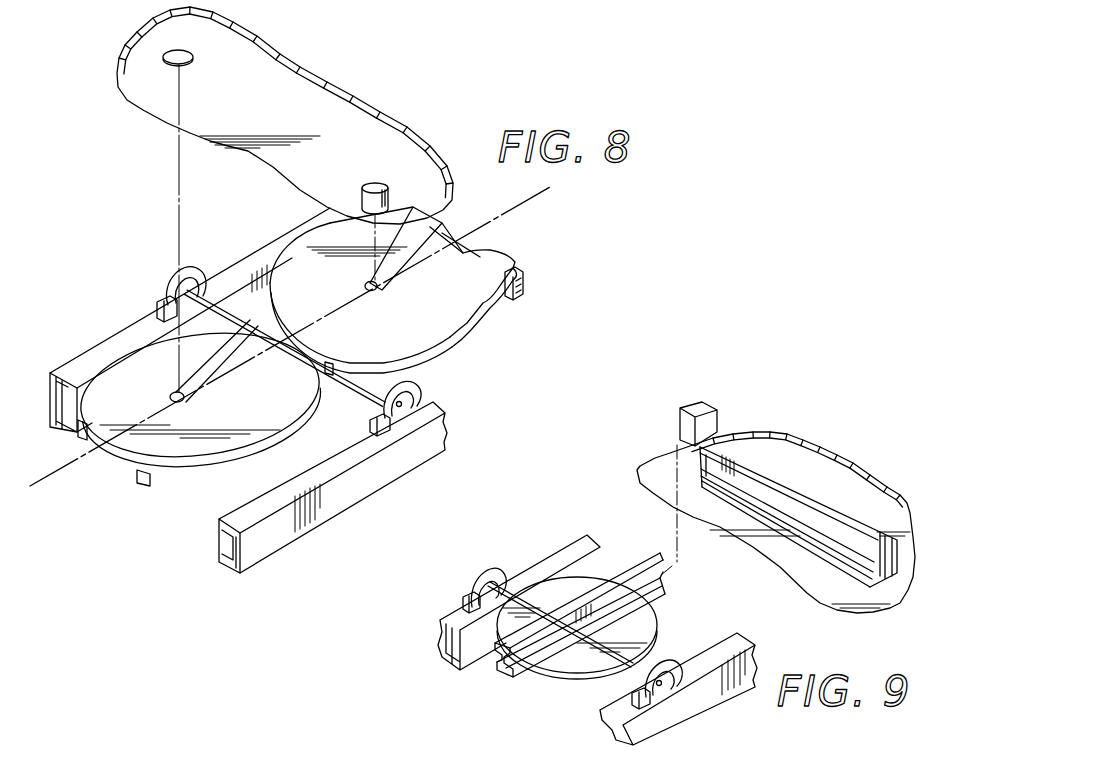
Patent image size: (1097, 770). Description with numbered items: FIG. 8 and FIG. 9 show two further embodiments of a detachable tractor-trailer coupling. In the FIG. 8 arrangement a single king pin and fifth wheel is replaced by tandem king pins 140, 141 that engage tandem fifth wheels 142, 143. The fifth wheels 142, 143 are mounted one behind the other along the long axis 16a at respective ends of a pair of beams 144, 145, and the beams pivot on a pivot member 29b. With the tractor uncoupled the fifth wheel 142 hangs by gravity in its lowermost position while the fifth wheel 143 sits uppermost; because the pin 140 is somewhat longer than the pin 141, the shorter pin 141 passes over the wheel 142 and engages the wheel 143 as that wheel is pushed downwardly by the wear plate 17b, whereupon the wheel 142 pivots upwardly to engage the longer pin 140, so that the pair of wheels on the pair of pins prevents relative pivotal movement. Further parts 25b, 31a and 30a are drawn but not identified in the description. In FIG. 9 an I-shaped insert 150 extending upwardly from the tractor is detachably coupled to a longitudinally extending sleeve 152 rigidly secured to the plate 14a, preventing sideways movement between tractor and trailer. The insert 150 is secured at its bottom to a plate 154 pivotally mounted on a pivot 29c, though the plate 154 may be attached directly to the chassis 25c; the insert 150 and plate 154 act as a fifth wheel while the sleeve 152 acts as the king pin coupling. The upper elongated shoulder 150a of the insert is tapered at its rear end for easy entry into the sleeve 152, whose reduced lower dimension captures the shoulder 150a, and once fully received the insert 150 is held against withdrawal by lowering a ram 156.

In FIG. 8, the wear plate 17b is at (289, 82).
In FIG. 8, the king pin 141 is at (190, 63).
In FIG. 8, the king pin 140 is at (368, 184).
In FIG. 8, the channel beam 25b is at (117, 336).
In FIG. 8, the fifth wheel 143 is at (186, 462).
In FIG. 8, the hook bracket 31a is at (173, 272).
In FIG. 8, the pivot member 29b is at (364, 386).
In FIG. 8, the hook bracket 30a is at (407, 408).
In FIG. 8, the beam 145 is at (262, 303).
In FIG. 8, the fifth wheel 142 is at (511, 258).
In FIG. 8, the beam 144 is at (357, 364).
In FIG. 8, the long axis 16a is at (43, 480).
In FIG. 9, the plate 14a is at (782, 444).
In FIG. 9, the sleeve 152 is at (828, 508).
In FIG. 9, the ram 156 is at (710, 412).
In FIG. 9, the I-shaped insert 150 is at (640, 557).
In FIG. 9, the upper elongated shoulder 150a is at (658, 578).
In FIG. 9, the plate 154 is at (573, 663).
In FIG. 9, the pivot 29c is at (640, 665).
In FIG. 9, the chassis 25c is at (442, 638).